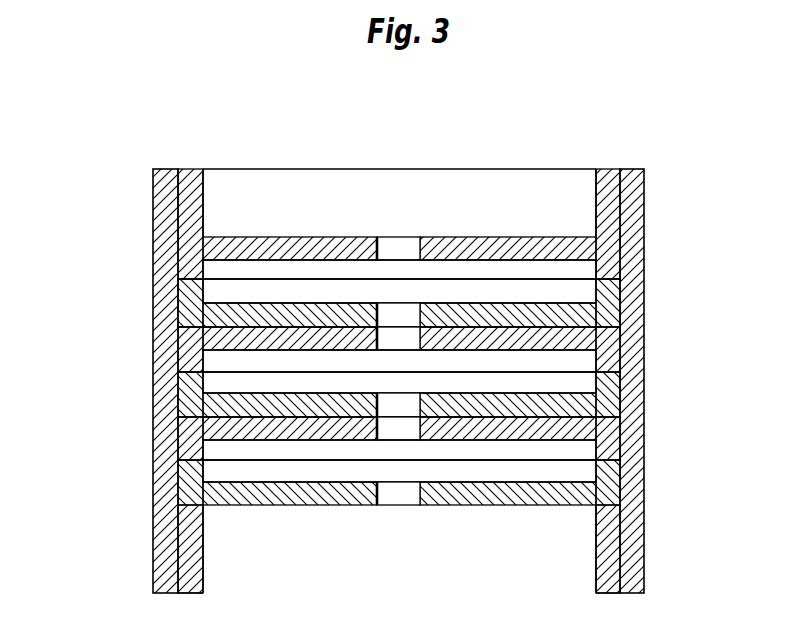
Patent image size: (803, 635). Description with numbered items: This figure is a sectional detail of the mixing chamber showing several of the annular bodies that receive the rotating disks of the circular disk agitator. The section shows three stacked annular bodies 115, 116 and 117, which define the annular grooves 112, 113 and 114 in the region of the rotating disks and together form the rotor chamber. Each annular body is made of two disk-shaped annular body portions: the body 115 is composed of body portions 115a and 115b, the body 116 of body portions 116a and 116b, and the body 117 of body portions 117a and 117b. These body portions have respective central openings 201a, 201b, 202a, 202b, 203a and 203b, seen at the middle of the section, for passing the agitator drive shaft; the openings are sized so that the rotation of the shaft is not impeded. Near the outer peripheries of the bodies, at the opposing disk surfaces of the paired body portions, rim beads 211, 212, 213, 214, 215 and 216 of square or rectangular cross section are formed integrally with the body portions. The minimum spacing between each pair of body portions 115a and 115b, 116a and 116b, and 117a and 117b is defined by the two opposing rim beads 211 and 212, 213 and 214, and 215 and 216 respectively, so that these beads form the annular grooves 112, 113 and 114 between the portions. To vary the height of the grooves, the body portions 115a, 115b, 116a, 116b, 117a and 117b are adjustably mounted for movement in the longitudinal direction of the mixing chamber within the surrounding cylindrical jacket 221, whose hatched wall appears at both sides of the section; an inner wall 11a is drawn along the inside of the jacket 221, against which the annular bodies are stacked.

The cylindrical jacket 221 is at (166, 172).
The inner housing wall 11a is at (177, 187).
The annular groove 114 is at (633, 233).
The annular groove 113 is at (630, 336).
The annular groove 112 is at (627, 438).
The annular body 117 is at (142, 265).
The annular body 116 is at (143, 385).
The annular body 115 is at (143, 474).
The annular body portion 117b is at (195, 233).
The annular body portion 117a is at (178, 310).
The annular body portion 116b is at (187, 358).
The annular body portion 116a is at (178, 408).
The annular body portion 115b is at (187, 445).
The annular body portion 115a is at (177, 498).
The central opening 203b is at (393, 243).
The central opening 203a is at (403, 313).
The central opening 202b is at (386, 343).
The central opening 202a is at (398, 405).
The central opening 201b is at (388, 432).
The central opening 201a is at (410, 498).
The rim bead 216 is at (608, 272).
The rim bead 215 is at (615, 287).
The rim bead 214 is at (610, 366).
The rim bead 213 is at (612, 380).
The rim bead 212 is at (610, 460).
The rim bead 211 is at (612, 472).